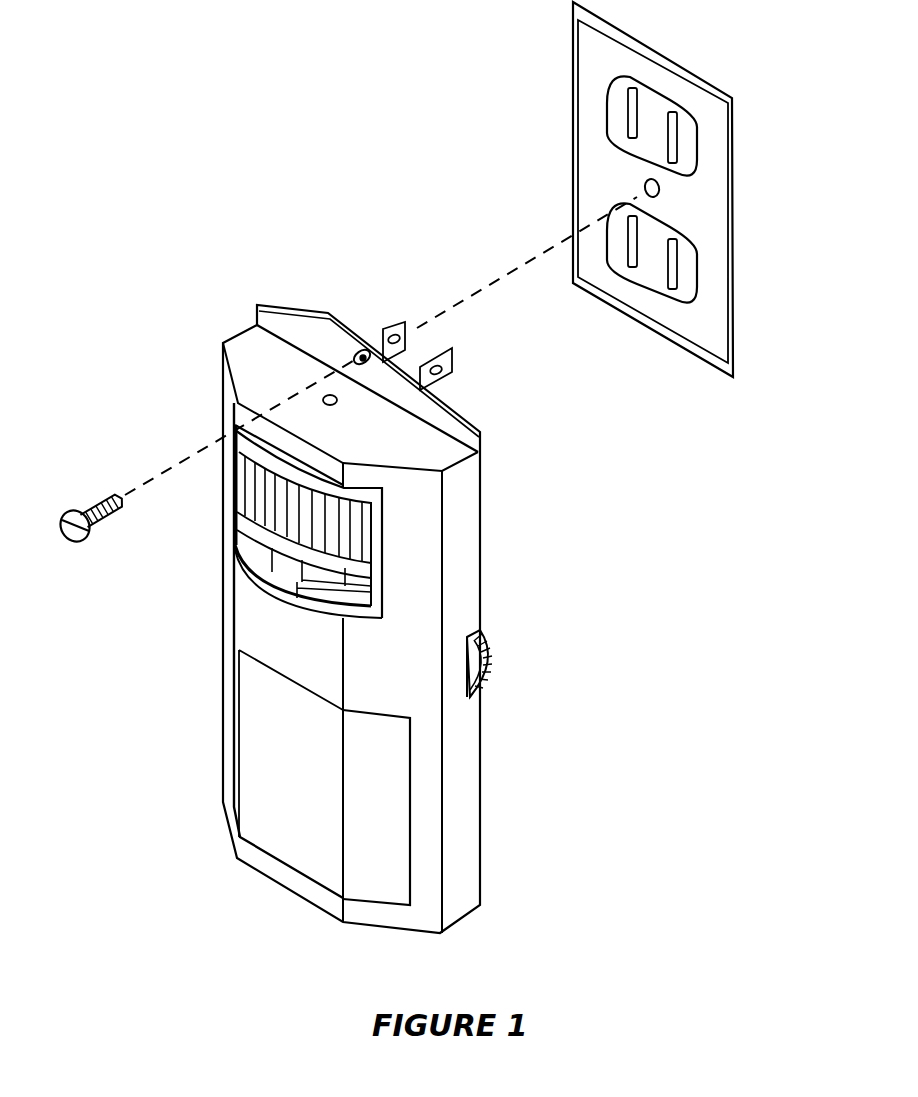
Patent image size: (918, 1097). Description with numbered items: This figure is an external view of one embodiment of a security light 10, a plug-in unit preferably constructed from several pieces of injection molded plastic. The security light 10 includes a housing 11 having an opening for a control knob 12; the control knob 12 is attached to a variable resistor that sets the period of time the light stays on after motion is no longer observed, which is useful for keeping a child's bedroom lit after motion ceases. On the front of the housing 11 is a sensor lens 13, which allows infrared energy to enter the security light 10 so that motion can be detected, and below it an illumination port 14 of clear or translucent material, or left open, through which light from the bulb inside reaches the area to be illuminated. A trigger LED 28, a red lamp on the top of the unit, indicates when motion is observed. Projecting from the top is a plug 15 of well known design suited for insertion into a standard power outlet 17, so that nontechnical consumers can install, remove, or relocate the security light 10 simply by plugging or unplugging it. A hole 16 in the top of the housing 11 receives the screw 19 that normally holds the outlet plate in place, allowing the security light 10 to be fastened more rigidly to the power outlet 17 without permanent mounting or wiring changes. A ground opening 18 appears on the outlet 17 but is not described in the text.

The security light 10 is at (218, 931).
The housing 11 is at (482, 473).
The control knob 12 is at (497, 652).
The sensor lens 13 is at (383, 537).
The illumination port 14 is at (410, 818).
The plug 15 is at (390, 328).
The hole 16 is at (359, 347).
The power outlet 17 is at (678, 267).
The outlet cover screw hole 18 is at (659, 191).
The screw 19 is at (78, 546).
The trigger LED 28 is at (333, 406).